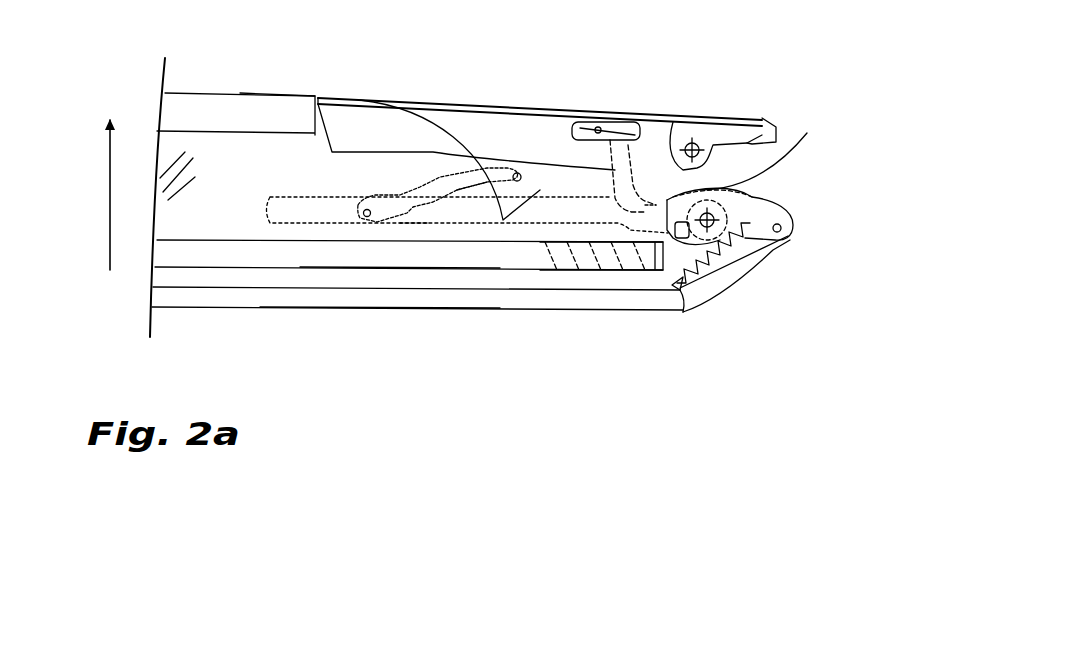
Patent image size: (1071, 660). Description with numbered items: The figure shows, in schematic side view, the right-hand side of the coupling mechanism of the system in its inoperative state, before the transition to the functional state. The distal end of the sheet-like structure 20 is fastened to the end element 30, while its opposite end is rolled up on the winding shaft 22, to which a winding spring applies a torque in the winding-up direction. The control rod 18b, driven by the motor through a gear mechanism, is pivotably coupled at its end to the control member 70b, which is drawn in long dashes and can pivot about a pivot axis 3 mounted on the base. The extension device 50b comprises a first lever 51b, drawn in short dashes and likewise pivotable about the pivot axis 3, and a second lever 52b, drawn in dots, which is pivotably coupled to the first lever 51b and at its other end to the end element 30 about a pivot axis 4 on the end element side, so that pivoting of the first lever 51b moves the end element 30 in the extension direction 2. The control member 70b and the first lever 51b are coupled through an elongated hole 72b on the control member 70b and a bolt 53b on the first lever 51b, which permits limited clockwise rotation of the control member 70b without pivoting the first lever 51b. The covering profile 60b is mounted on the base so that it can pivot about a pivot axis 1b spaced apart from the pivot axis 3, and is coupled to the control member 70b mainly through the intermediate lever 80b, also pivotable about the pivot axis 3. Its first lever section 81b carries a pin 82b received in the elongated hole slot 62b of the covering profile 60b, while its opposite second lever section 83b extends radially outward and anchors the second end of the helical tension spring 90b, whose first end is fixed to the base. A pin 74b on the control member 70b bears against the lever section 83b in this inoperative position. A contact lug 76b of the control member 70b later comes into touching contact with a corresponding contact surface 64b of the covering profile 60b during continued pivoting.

The extension direction 2 is at (108, 225).
The pivot axis 3 is at (761, 142).
The pivot axis on the end element side 4 is at (517, 173).
The sheet-like structure 20 is at (278, 182).
The end element 30 is at (256, 94).
The winding shaft 22 is at (347, 248).
The control rod 18b is at (307, 295).
The extension device 50b is at (388, 180).
The first lever 51b is at (417, 215).
The second lever 52b is at (467, 187).
The covering profile 60b is at (490, 98).
The elongated hole slot 62b is at (570, 124).
The pin 82b is at (598, 127).
The first lever section 81b is at (622, 160).
The intermediate lever 80b is at (647, 198).
The contact surface 64b is at (725, 143).
The pivot axis 1b is at (700, 140).
The contact lug 76b is at (776, 128).
The control member 70b is at (768, 197).
The pin 74b is at (783, 243).
The second lever section 83b is at (757, 233).
The elongated hole 72b is at (668, 238).
The bolt 53b is at (693, 283).
The helical tension spring 90b is at (673, 285).